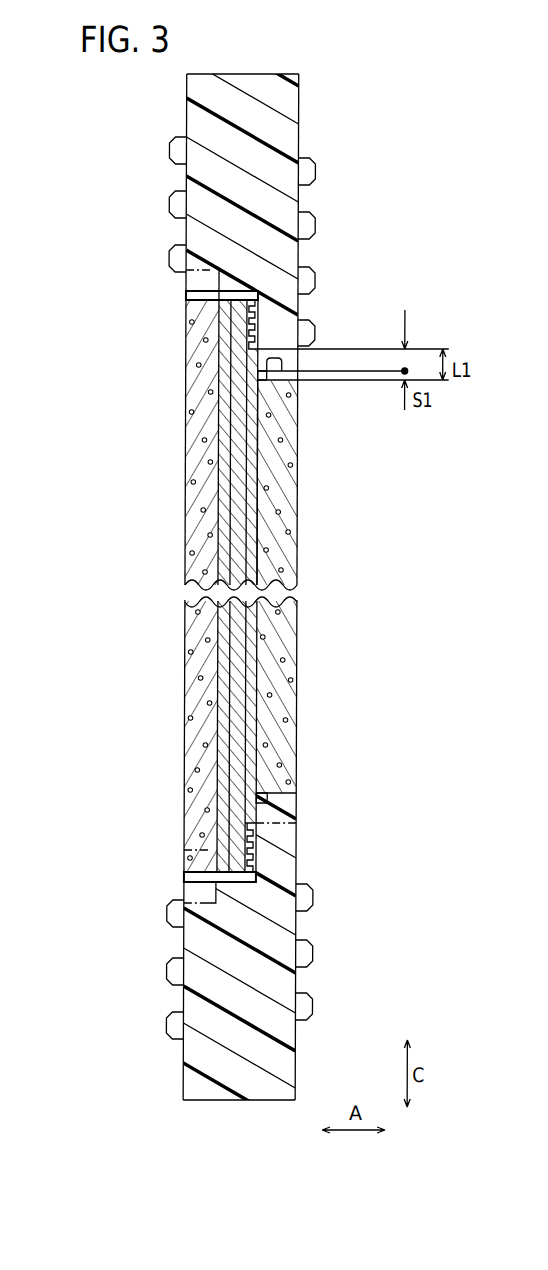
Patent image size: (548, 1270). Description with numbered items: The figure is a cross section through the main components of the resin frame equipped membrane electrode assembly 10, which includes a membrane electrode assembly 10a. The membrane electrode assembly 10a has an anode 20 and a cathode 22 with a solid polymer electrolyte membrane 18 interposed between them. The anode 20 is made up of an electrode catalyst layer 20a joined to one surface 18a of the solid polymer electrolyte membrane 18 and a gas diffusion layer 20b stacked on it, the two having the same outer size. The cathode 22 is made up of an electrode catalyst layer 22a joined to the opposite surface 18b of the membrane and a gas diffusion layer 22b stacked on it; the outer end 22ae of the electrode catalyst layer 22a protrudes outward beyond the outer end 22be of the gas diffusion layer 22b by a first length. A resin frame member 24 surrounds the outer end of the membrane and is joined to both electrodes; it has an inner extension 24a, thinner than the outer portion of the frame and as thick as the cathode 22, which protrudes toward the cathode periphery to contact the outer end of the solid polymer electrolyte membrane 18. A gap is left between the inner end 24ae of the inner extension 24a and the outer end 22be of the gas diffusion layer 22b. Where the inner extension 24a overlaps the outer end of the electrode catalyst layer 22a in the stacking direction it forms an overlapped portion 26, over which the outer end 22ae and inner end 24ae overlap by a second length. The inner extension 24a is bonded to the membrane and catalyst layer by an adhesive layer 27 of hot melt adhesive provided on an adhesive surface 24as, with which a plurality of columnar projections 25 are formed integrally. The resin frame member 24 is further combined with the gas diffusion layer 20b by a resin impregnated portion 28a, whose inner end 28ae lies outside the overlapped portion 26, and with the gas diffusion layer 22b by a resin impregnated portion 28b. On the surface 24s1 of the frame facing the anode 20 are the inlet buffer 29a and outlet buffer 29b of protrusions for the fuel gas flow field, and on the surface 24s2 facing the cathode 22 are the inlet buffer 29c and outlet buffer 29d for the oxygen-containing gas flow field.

The resin frame equipped membrane electrode assembly 10 is at (415, 70).
The membrane electrode assembly 10a is at (187, 495).
The solid polymer electrolyte membrane 18 is at (233, 681).
The one surface of the solid polymer electrolyte membrane 18a is at (226, 728).
The surface of the solid polymer electrolyte membrane 18b is at (263, 728).
The anode 20 is at (112, 397).
The electrode catalyst layer 20a is at (226, 445).
The gas diffusion layer 20b is at (200, 408).
The cathode 22 is at (372, 505).
The electrode catalyst layer 22a is at (253, 558).
The gas diffusion layer 22b is at (281, 517).
The outer end of the electrode catalyst layer 22ae is at (257, 328).
The outer end of the gas diffusion layer 22be is at (259, 368).
The resin frame member 24 is at (299, 74).
The inner extension 24a is at (298, 357).
The inner end of the inner extension 24ae is at (277, 383).
The adhesive surface 24as is at (258, 825).
The surface of the resin frame member 24s1 is at (187, 98).
The surface of the resin frame member 24s2 is at (299, 99).
The columnar projections 25 is at (251, 843).
The overlapped portion 26 is at (436, 329).
The adhesive layer 27 is at (262, 298).
The resin impregnated portion 28a is at (187, 863).
The inner end of the resin impregnated portion 28ae is at (187, 342).
The resin impregnated portion 28b is at (270, 783).
The inlet buffer 29a is at (172, 202).
The outlet buffer 29b is at (170, 970).
The inlet buffer 29c is at (316, 223).
The outlet buffer 29d is at (314, 953).